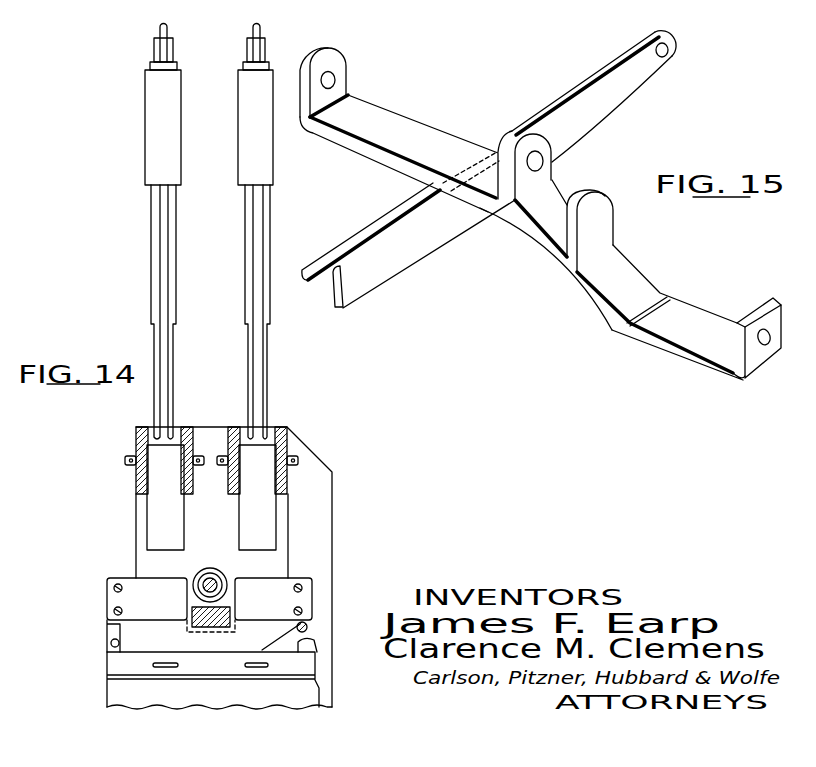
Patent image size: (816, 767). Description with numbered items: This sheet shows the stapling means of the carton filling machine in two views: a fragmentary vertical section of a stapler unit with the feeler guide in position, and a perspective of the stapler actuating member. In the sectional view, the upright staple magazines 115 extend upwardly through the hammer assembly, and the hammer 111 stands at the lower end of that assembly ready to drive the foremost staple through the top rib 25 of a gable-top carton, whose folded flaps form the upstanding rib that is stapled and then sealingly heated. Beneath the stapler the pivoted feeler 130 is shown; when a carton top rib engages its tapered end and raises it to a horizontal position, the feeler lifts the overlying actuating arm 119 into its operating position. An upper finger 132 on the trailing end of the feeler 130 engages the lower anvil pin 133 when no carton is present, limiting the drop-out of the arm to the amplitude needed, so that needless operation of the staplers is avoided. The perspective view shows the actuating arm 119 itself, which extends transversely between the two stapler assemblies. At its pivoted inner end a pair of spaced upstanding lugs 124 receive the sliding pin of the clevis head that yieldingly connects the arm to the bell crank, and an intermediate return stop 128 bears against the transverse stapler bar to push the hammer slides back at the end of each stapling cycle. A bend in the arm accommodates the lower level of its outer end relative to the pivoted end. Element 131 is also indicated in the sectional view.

In FIG. 14, the top rib 25 is at (110, 663).
In FIG. 14, the hammer 111 is at (306, 631).
In FIG. 14, the staple magazine 115 is at (243, 206).
In FIG. 14, the actuating arm 119 is at (226, 609).
In FIG. 15, the actuating arm 119 is at (500, 234).
In FIG. 15, the upstanding lug 124 is at (345, 78).
In FIG. 15, the intermediate return stop 128 is at (585, 251).
In FIG. 14, the feeler 130 is at (268, 649).
In FIG. 14, the tab 131 is at (318, 641).
In FIG. 14, the upper finger 132 is at (110, 620).
In FIG. 14, the lower anvil pin 133 is at (108, 643).